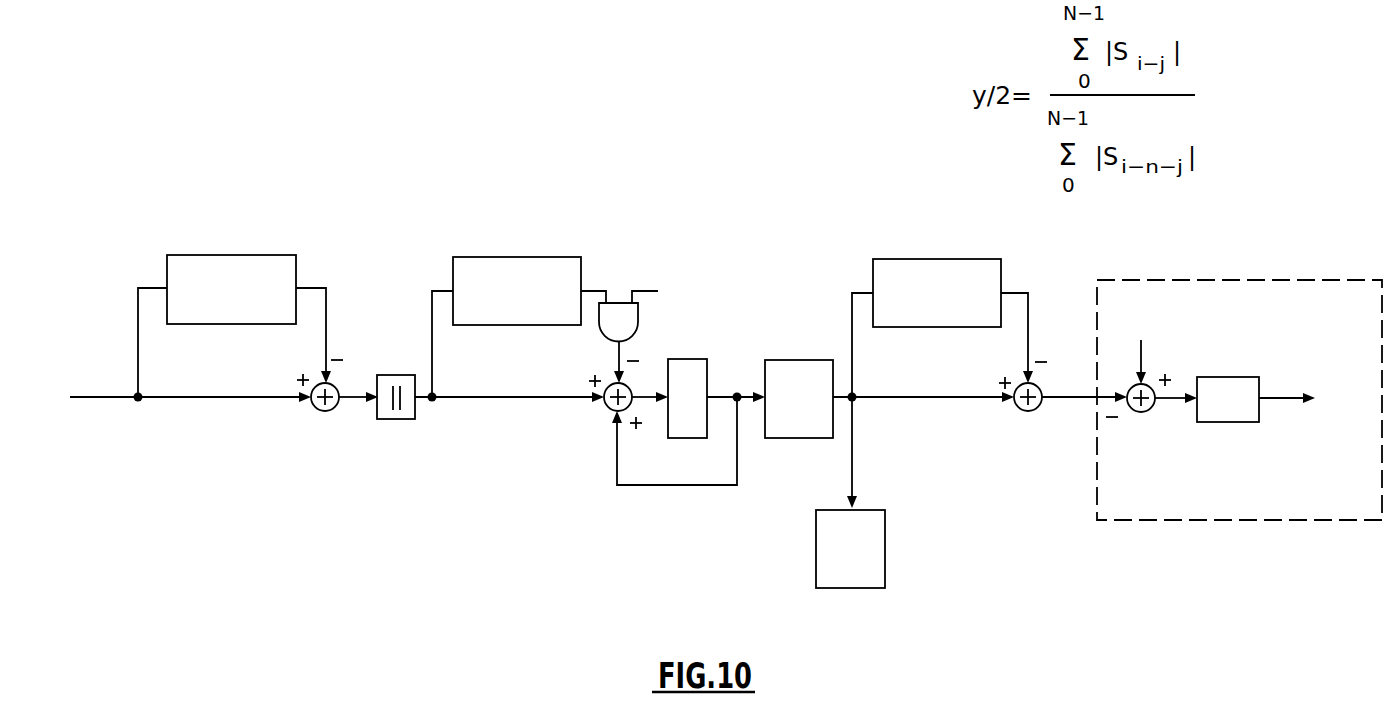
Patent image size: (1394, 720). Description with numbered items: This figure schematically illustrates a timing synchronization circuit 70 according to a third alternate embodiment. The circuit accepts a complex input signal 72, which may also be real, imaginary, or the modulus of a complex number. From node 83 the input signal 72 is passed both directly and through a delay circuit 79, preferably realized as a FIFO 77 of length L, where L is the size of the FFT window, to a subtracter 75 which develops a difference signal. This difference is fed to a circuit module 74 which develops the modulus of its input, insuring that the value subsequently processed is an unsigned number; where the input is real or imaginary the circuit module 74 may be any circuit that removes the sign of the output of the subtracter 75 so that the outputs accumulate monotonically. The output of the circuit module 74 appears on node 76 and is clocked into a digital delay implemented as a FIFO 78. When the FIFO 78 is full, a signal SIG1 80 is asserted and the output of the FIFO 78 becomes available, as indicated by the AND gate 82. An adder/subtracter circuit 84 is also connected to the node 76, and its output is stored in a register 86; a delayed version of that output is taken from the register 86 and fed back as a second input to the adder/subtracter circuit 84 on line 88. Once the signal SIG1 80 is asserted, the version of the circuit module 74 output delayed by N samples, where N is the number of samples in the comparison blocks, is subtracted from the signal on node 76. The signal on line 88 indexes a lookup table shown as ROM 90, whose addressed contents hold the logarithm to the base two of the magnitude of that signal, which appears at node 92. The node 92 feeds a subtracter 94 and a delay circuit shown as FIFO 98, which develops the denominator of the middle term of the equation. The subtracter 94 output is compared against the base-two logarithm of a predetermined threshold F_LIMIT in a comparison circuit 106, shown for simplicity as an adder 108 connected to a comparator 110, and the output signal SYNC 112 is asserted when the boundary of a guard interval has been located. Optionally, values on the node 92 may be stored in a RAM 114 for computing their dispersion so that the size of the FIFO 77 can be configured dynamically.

The timing synchronization circuit 70 is at (398, 150).
The complex input signal 72 is at (75, 399).
The circuit module 74 is at (402, 419).
The subtracter 75 is at (317, 410).
The node 76 is at (437, 400).
The FIFO of length L 77 is at (245, 255).
The FIFO 78 is at (532, 257).
The delay circuit 79 is at (249, 295).
The signal SIG1 80 is at (648, 291).
The AND gate 82 is at (630, 328).
The node 83 is at (147, 399).
The adder/subtracter circuit 84 is at (607, 412).
The register 86 is at (697, 359).
The line 88 is at (687, 485).
The ROM 90 is at (775, 360).
The node 92 is at (855, 400).
The subtracter 94 is at (1020, 410).
The FIFO 98 is at (952, 259).
The comparison circuit 106 is at (1305, 331).
The adder 108 is at (1137, 413).
The comparator 110 is at (1222, 422).
The output signal SYNC 112 is at (1273, 400).
The RAM 114 is at (817, 555).